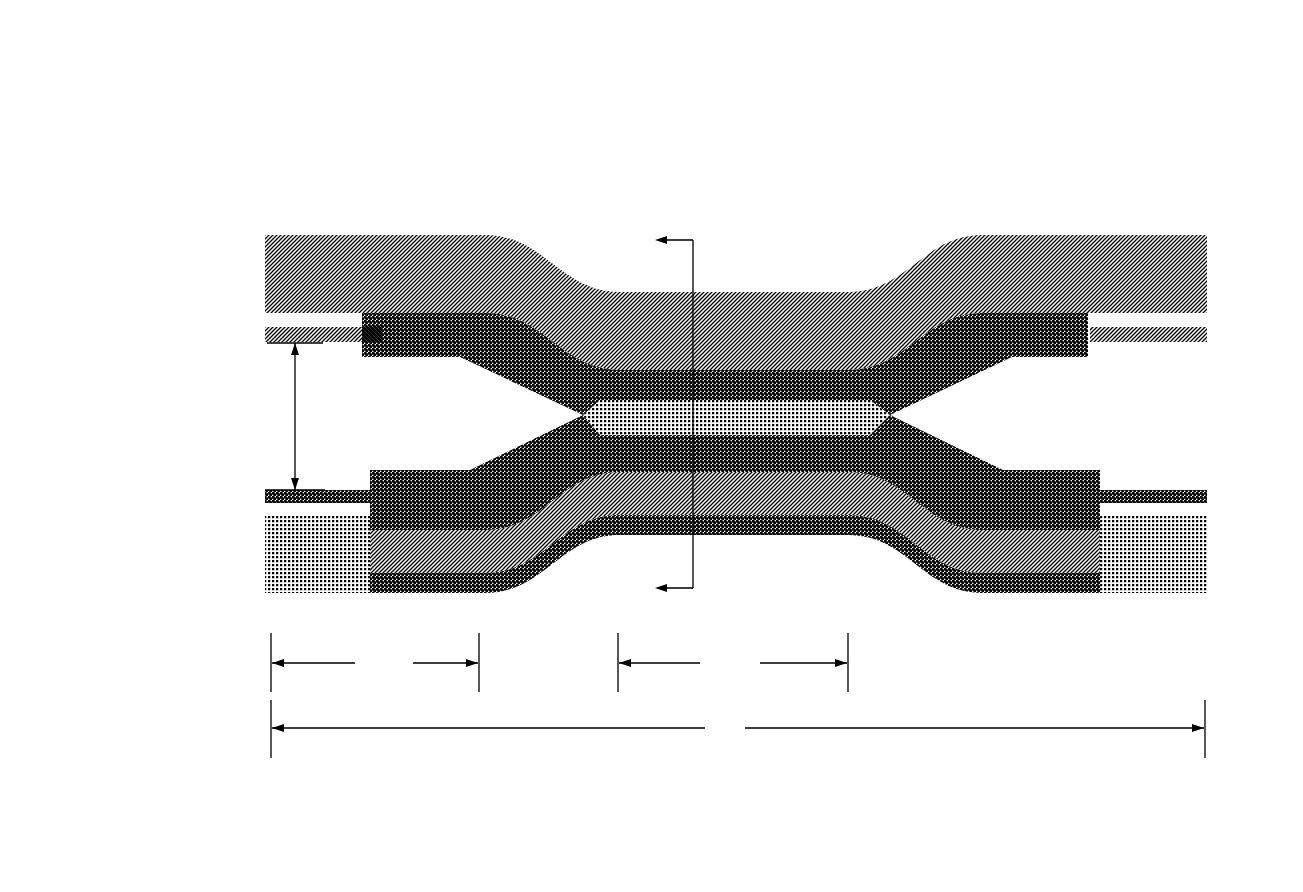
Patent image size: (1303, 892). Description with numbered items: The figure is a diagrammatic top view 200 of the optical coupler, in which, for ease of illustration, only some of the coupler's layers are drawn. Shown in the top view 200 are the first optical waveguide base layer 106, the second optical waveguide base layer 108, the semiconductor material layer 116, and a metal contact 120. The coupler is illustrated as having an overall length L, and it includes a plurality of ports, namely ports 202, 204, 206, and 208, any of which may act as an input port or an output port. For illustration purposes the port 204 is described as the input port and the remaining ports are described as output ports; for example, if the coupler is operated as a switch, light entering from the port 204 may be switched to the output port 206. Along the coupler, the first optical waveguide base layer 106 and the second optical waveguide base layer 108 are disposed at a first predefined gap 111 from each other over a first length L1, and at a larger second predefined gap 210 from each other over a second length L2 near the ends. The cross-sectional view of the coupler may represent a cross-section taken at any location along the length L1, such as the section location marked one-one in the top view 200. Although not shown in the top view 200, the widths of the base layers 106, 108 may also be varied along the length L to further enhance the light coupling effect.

The top view 200 is at (978, 112).
The first optical waveguide base layer 106 is at (265, 336).
The second optical waveguide base layer 108 is at (265, 540).
The metal contact 120 is at (978, 254).
The semiconductor material layer 116 is at (465, 464).
The first predefined gap 111 is at (822, 400).
The port 202 is at (262, 352).
The port 204 is at (262, 478).
The port 206 is at (1212, 352).
The port 208 is at (1212, 480).
The second predefined gap 210 is at (295, 416).